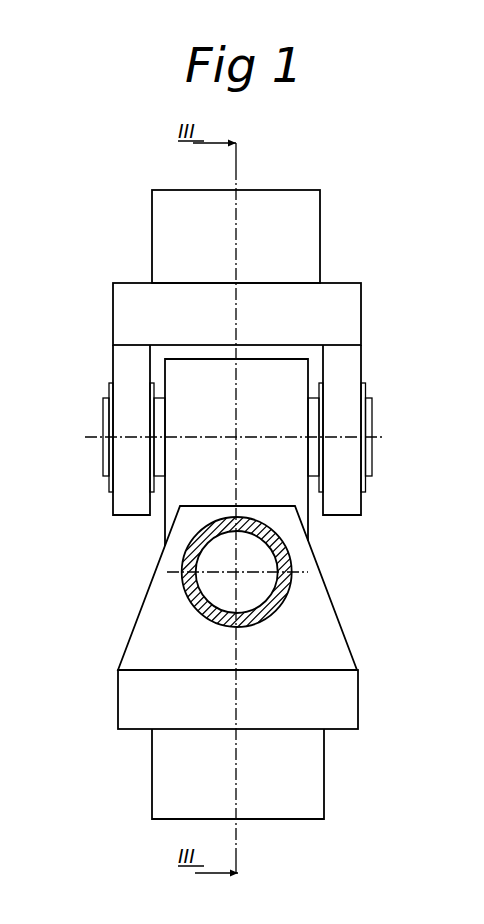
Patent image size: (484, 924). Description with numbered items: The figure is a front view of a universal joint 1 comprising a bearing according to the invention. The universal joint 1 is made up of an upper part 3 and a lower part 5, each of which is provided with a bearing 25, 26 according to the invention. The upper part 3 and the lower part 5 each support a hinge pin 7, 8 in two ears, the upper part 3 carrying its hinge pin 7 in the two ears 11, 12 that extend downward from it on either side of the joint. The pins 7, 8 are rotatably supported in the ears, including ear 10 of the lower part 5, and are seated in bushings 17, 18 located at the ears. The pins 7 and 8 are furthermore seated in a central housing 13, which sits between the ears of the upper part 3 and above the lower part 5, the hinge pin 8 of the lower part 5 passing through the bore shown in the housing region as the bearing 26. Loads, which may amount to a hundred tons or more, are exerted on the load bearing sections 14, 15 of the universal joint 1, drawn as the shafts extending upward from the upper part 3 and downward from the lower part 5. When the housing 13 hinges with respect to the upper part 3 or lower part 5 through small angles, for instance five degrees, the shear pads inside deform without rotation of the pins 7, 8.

The universal joint 1 is at (95, 455).
The upper part 3 is at (140, 260).
The lower part 5 is at (143, 795).
The hinge pin 7 is at (368, 402).
The hinge pin 8 is at (252, 587).
The ear 10 is at (318, 647).
The ear 11 is at (130, 368).
The ear 12 is at (341, 497).
The housing 13 is at (203, 476).
The load bearing section 14 is at (310, 213).
The load bearing section 15 is at (305, 793).
The bushing 17 is at (365, 483).
The bushing 18 is at (112, 483).
The bearing 25 is at (160, 420).
The bearing 26 is at (382, 437).